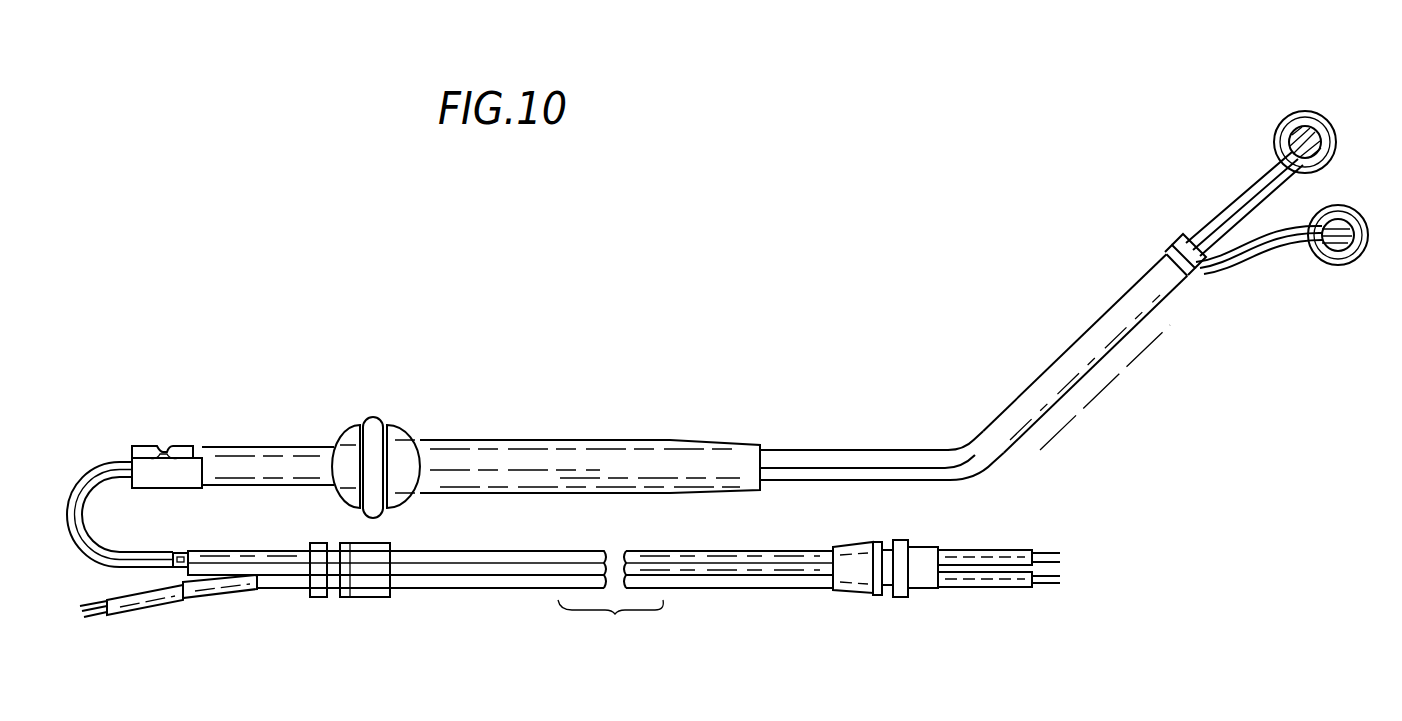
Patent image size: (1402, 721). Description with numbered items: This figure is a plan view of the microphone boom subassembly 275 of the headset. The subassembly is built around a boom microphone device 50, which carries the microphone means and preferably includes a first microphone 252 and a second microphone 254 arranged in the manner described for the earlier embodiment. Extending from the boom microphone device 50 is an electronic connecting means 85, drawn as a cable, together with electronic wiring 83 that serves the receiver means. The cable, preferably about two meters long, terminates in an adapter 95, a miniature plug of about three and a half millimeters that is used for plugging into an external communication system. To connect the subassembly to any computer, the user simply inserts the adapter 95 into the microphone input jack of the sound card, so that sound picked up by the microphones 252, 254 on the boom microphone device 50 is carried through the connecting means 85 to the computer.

The boom microphone device 50 is at (990, 437).
The microphone boom subassembly 275 is at (1113, 350).
The second microphone 254 is at (1326, 116).
The first microphone 252 is at (1358, 250).
The electronic wiring 83 is at (160, 607).
The electronic connecting means 85 is at (527, 590).
The adapter 95 is at (953, 590).